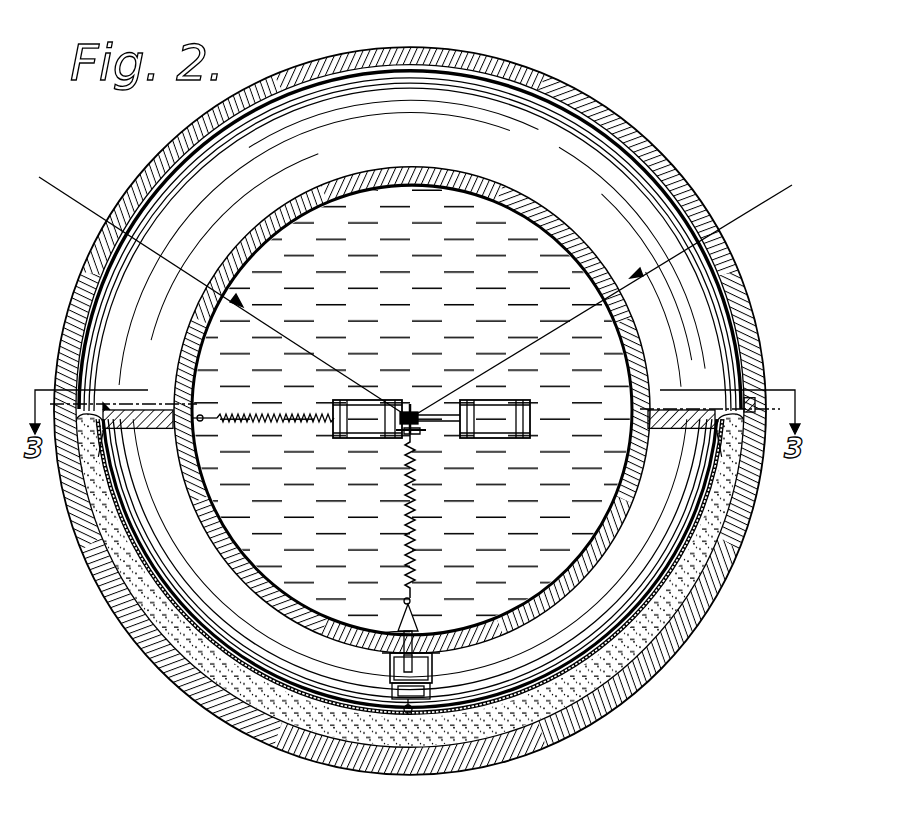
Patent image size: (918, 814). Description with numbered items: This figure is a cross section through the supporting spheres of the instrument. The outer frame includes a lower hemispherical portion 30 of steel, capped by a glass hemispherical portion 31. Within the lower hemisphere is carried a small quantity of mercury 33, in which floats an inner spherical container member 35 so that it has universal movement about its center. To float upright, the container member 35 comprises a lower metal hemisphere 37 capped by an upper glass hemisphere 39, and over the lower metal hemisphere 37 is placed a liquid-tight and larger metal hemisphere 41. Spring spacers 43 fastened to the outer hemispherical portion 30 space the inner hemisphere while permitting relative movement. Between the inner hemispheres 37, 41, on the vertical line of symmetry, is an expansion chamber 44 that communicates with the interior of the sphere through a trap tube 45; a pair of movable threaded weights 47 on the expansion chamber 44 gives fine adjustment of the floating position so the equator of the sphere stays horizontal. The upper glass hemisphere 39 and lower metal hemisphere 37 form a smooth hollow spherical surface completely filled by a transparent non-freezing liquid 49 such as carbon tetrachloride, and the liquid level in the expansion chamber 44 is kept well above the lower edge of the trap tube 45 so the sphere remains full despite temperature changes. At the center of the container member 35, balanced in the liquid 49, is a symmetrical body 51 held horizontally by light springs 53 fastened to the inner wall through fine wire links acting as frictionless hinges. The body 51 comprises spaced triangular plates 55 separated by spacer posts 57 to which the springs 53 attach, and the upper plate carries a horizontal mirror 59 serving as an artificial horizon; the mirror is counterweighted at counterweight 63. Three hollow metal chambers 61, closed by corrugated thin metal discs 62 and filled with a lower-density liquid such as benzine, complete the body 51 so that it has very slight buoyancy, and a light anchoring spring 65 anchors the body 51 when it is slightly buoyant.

The hemispherical portion 30 is at (410, 411).
The hemispherical portion 31 is at (410, 240).
The mercury 33 is at (409, 580).
The inner spherical container member 35 is at (410, 244).
The lower metal hemisphere 37 is at (410, 563).
The upper glass hemisphere 39 is at (412, 243).
The larger metal hemisphere 41 is at (410, 566).
The spring spacers 43 is at (429, 413).
The expansion chamber 44 is at (432, 671).
The trap tube 45 is at (392, 652).
The threaded weights 47 is at (417, 704).
The liquid 49 is at (412, 410).
The symmetrical body 51 is at (432, 382).
The springs 53 is at (268, 410).
The triangular plates 55 is at (400, 412).
The spacer posts 57 is at (414, 430).
The horizontal mirror 59 is at (410, 406).
The hollow metal chambers 61 is at (502, 430).
The corrugated thin metal discs 62 is at (355, 400).
The counterweight 63 is at (398, 433).
The anchoring spring 65 is at (416, 548).